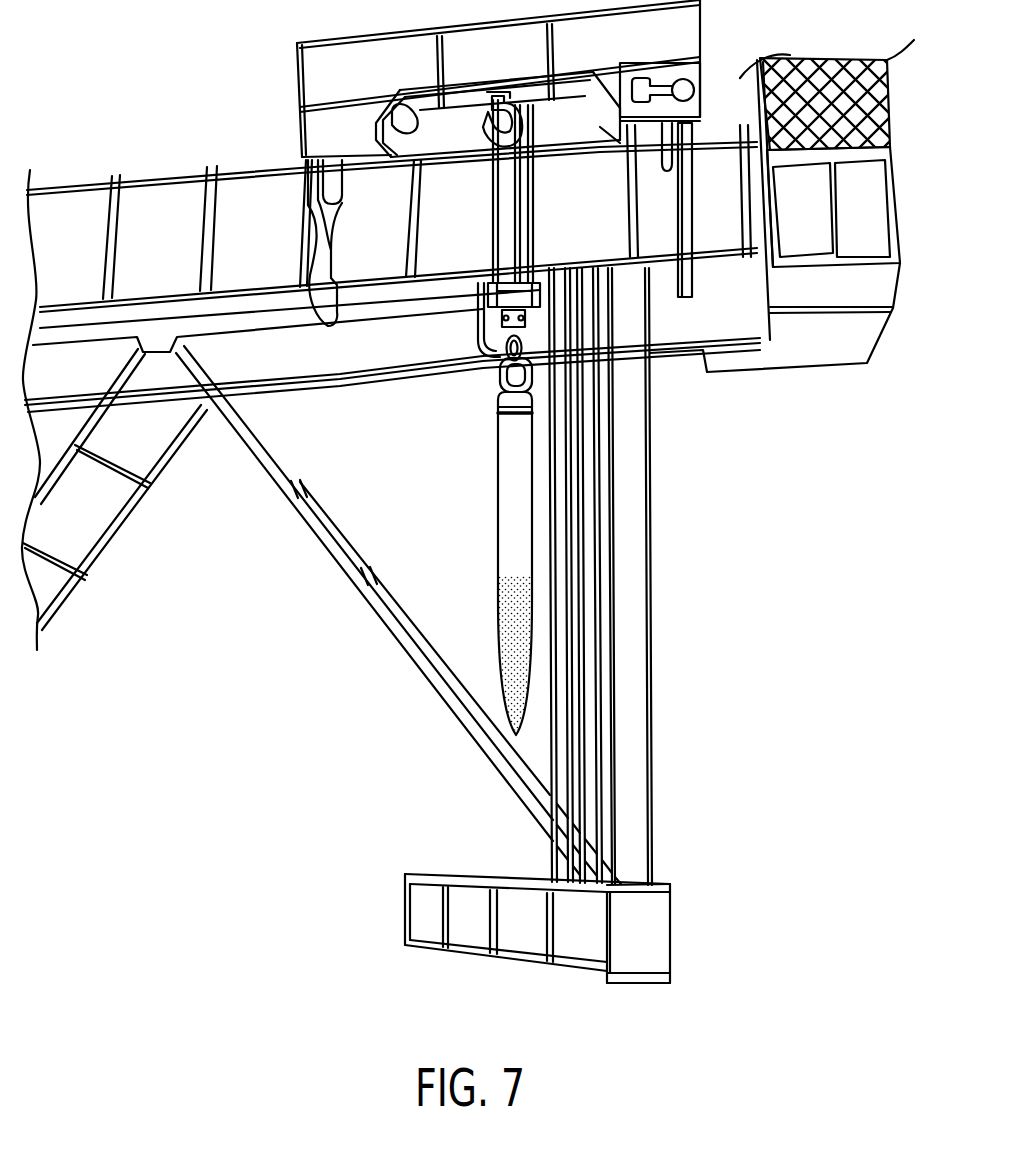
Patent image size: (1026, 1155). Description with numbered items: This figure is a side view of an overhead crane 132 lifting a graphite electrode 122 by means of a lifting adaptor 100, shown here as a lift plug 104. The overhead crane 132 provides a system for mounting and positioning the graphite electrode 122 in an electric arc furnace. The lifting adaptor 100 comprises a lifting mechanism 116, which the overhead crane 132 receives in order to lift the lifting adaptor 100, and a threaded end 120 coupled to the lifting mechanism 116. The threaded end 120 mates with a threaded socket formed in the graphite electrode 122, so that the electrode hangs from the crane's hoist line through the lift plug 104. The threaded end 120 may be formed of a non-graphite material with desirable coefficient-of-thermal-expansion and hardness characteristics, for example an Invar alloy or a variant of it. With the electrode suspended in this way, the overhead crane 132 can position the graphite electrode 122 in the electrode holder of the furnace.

The overhead crane 132 is at (220, 102).
The lifting adaptor 100 is at (549, 417).
The lifting mechanism 116 is at (486, 390).
The lift plug 104 is at (478, 402).
The threaded end 120 is at (480, 422).
The graphite electrode 122 is at (498, 548).